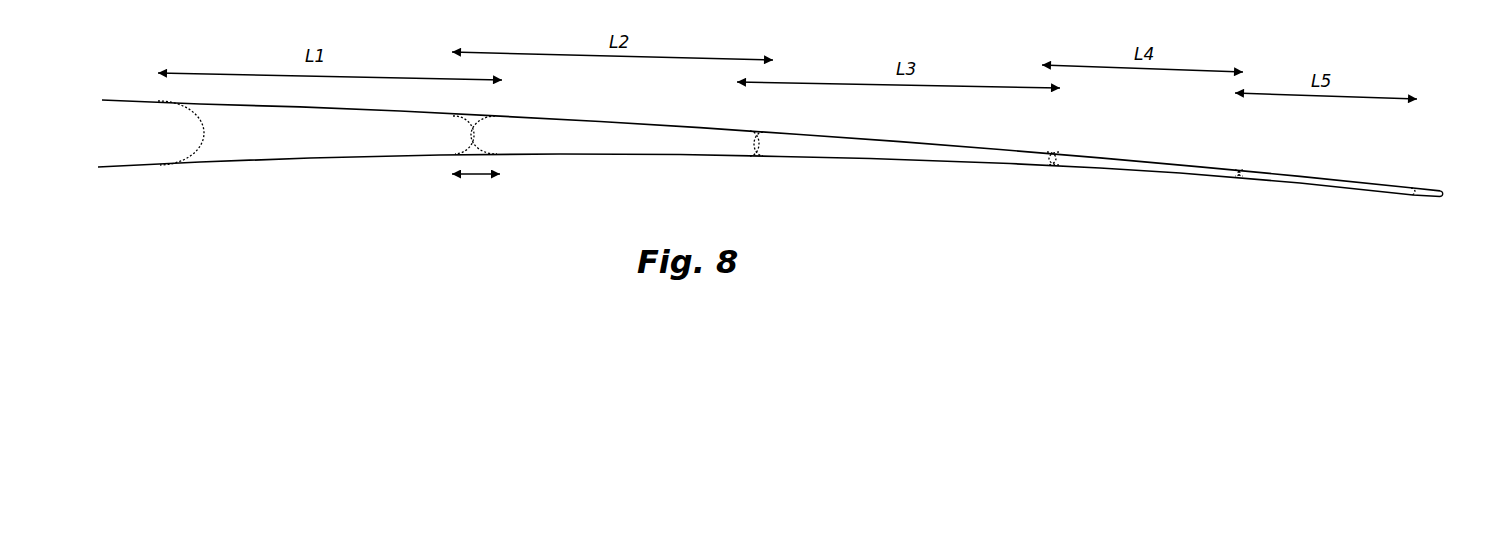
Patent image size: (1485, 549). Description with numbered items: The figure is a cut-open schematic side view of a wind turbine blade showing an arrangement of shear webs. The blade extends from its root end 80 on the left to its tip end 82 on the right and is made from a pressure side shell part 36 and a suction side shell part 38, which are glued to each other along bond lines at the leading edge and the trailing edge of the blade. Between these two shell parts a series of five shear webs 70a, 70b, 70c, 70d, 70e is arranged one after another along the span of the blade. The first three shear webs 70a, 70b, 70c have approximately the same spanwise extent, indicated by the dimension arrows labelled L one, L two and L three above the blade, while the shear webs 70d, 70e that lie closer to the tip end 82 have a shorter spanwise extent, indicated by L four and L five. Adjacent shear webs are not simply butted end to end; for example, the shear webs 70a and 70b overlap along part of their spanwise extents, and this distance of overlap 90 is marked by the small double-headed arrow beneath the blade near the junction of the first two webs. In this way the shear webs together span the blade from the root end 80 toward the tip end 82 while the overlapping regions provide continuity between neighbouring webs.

The pressure side shell part 36 is at (897, 160).
The suction side shell part 38 is at (597, 120).
The shear web 70a is at (300, 147).
The shear web 70b is at (540, 135).
The shear web 70c is at (795, 147).
The shear web 70d is at (1080, 163).
The shear web 70e is at (1287, 175).
The root end 80 is at (108, 185).
The tip end 82 is at (1444, 169).
The distance of overlap 90 is at (476, 176).